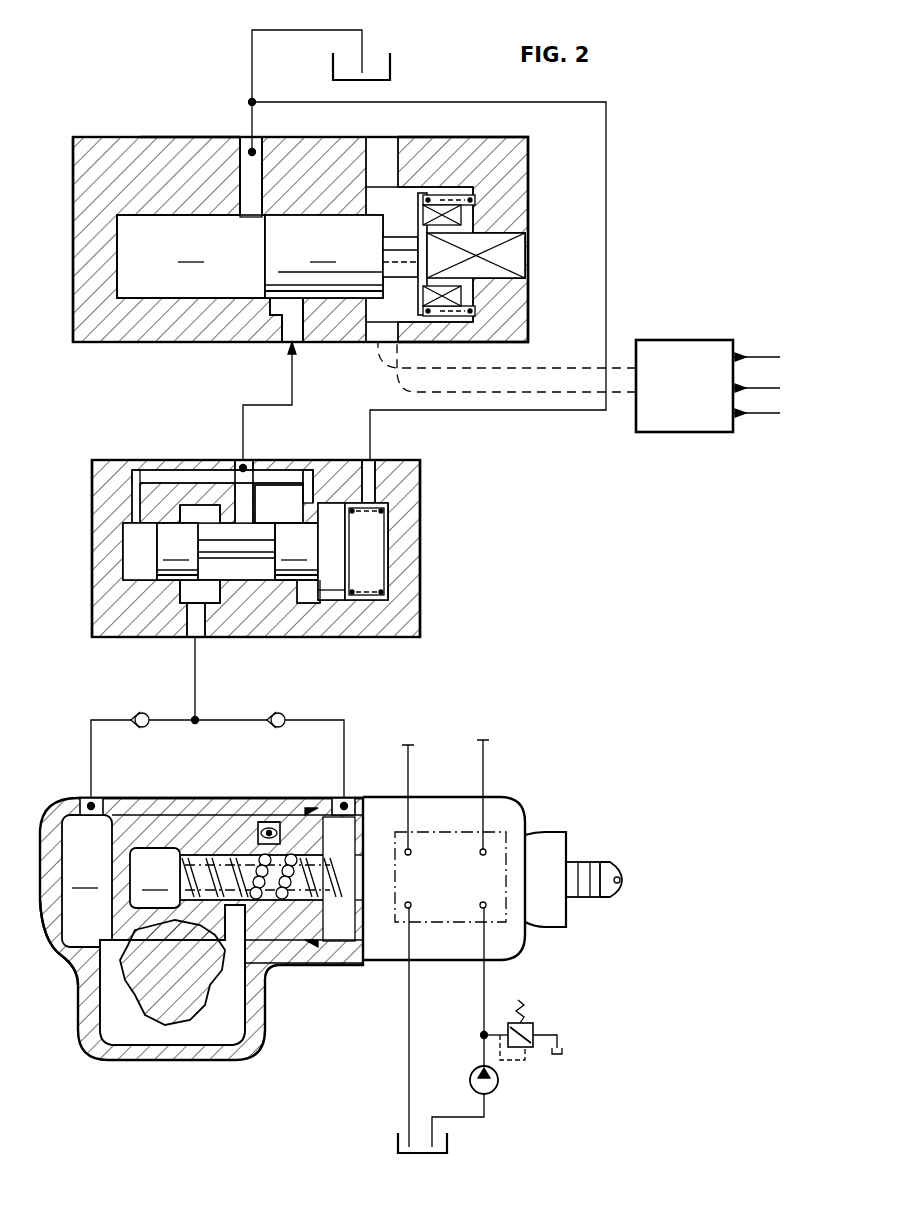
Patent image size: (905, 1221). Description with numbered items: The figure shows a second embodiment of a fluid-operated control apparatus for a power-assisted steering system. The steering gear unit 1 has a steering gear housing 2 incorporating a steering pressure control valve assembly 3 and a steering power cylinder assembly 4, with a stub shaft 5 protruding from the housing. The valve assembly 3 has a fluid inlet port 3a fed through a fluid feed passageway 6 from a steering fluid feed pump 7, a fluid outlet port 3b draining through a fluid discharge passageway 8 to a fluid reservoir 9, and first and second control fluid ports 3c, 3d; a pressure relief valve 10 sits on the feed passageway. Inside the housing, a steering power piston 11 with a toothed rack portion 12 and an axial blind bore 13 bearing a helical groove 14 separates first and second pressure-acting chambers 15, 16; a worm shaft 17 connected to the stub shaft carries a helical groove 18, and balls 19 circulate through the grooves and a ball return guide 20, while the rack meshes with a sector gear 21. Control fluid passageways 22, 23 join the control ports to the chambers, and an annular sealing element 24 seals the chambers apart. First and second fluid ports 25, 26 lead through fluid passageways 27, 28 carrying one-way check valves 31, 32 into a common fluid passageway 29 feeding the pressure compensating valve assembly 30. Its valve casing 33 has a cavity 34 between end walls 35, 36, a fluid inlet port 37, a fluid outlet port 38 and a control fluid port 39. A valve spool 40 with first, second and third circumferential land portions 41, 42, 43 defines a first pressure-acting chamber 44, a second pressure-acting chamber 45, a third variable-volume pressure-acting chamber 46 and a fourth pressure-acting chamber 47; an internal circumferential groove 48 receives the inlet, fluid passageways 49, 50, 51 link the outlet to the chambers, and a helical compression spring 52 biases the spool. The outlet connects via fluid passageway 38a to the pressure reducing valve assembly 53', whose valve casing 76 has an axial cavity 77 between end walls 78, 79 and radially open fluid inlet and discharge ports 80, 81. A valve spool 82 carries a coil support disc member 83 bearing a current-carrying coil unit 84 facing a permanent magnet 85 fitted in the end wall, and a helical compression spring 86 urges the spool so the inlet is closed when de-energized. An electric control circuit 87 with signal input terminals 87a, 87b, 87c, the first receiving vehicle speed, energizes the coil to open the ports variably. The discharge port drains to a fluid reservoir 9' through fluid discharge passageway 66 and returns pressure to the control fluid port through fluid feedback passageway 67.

The steering gear unit 1 is at (206, 918).
The steering gear housing 2 is at (525, 808).
The steering pressure control valve assembly 3 is at (510, 852).
The fluid inlet port 3a is at (480, 906).
The fluid outlet port 3b is at (418, 897).
The first control fluid port 3c is at (480, 855).
The second control fluid port 3d is at (411, 853).
The steering power cylinder assembly 4 is at (64, 970).
The stub shaft 5 is at (598, 897).
The fluid feed passageway 6 is at (484, 992).
The steering fluid feed pump 7 is at (498, 1085).
The fluid discharge passageway 8 is at (409, 1052).
The fluid reservoir 9 is at (405, 1143).
The fluid reservoir 9' is at (378, 67).
The pressure relief valve 10 is at (535, 1022).
The steering power piston 11 is at (158, 806).
The toothed rack portion 12 is at (236, 945).
The axial blind bore 13 is at (155, 878).
The helical groove 14 is at (200, 852).
The first pressure-acting chamber 15 is at (87, 881).
The second pressure-acting chamber 16 is at (356, 942).
The worm shaft 17 is at (330, 900).
The helical groove 18 is at (255, 831).
The balls 19 is at (287, 853).
The ball return guide 20 is at (266, 822).
The sector gear 21 is at (128, 988).
The control fluid passageway 22 is at (484, 760).
The control fluid passageway 23 is at (409, 762).
The annular sealing element 24 is at (312, 806).
The first fluid port 25 is at (88, 798).
The second fluid port 26 is at (347, 798).
The fluid passageway 27 is at (92, 754).
The fluid passageway 28 is at (320, 720).
The common fluid passageway 29 is at (196, 700).
The pressure compensating valve assembly 30 is at (259, 535).
The one-way check valve 31 is at (148, 727).
The one-way check valve 32 is at (281, 712).
The valve casing 33 is at (92, 497).
The cavity 34 is at (258, 582).
The end wall 35 is at (123, 556).
The end wall 36 is at (420, 537).
The fluid inlet port 37 is at (196, 637).
The fluid outlet port 38 is at (246, 466).
The fluid passageway 38a is at (293, 380).
The control fluid port 39 is at (374, 464).
The valve spool 40 is at (233, 580).
The first circumferential land portion 41 is at (177, 551).
The second circumferential land portion 42 is at (296, 551).
The third circumferential land portion 43 is at (347, 551).
The first pressure-acting chamber 44 is at (279, 504).
The second pressure-acting chamber 45 is at (138, 580).
The third variable-volume pressure-acting chamber 46 is at (308, 603).
The fourth pressure-acting chamber 47 is at (388, 578).
The internal circumferential groove 48 is at (196, 505).
The fluid passageway 49 is at (240, 464).
The fluid passageway 50 is at (136, 470).
The fluid passageway 51 is at (307, 475).
The helical compression spring 52 is at (366, 551).
The pressure reducing valve assembly 53' is at (304, 231).
The fluid discharge passageway 66 is at (253, 68).
The fluid feedback passageway 67 is at (606, 216).
The valve casing 76 is at (152, 137).
The axial cavity 77 is at (191, 256).
The end wall 78 is at (73, 252).
The end wall 79 is at (528, 172).
The fluid inlet port 80 is at (290, 345).
The fluid discharge port 81 is at (243, 137).
The valve spool 82 is at (341, 256).
The coil support disc member 83 is at (418, 222).
The current-carrying coil unit 84 is at (461, 214).
The permanent magnet 85 is at (528, 254).
The helical compression spring 86 is at (428, 195).
The electric control circuit 87 is at (665, 432).
The first signal input terminal 87a is at (748, 355).
The second signal input terminal 87b is at (748, 389).
The third signal input terminal 87c is at (756, 415).